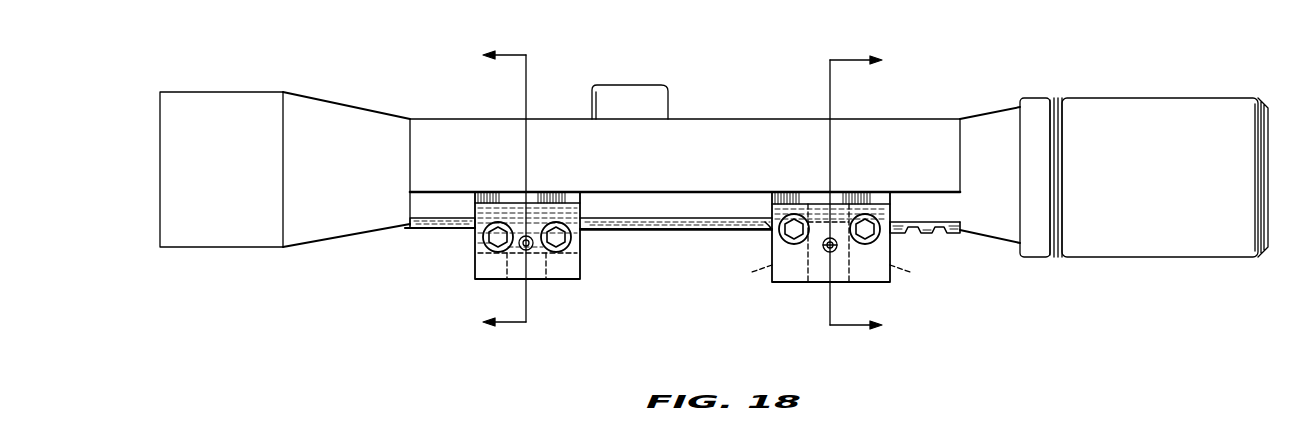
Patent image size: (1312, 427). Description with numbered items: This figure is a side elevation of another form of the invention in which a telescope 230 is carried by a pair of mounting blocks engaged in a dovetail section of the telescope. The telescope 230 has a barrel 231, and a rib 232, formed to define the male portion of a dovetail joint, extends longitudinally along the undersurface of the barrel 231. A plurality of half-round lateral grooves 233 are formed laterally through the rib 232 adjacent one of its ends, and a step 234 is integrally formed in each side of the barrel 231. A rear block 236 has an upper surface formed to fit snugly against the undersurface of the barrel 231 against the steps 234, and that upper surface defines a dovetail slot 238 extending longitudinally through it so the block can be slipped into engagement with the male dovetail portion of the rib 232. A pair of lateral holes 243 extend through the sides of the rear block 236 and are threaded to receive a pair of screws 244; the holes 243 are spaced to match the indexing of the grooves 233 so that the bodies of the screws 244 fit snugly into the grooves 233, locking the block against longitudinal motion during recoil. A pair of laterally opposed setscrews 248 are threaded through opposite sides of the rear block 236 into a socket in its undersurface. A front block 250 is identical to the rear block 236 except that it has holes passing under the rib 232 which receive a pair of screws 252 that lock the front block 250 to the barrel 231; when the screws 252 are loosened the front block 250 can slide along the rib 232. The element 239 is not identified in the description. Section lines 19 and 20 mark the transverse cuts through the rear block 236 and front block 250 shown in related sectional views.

The section line 19- 19 is at (870, 193).
The section line 20- 20 is at (488, 189).
The telescope 230 is at (1083, 82).
The barrel 231 is at (762, 119).
The rib 232 is at (668, 232).
The half-round lateral grooves 233 is at (766, 230).
The step 234 is at (681, 198).
The rear block 236 is at (777, 283).
The dovetail slot 238 is at (474, 232).
The guide surface 239 is at (474, 250).
The lateral holes 243 is at (774, 266).
The screws 244 is at (796, 214).
The setscrews 248 is at (828, 252).
The front block 250 is at (558, 282).
The screws 252 is at (480, 238).